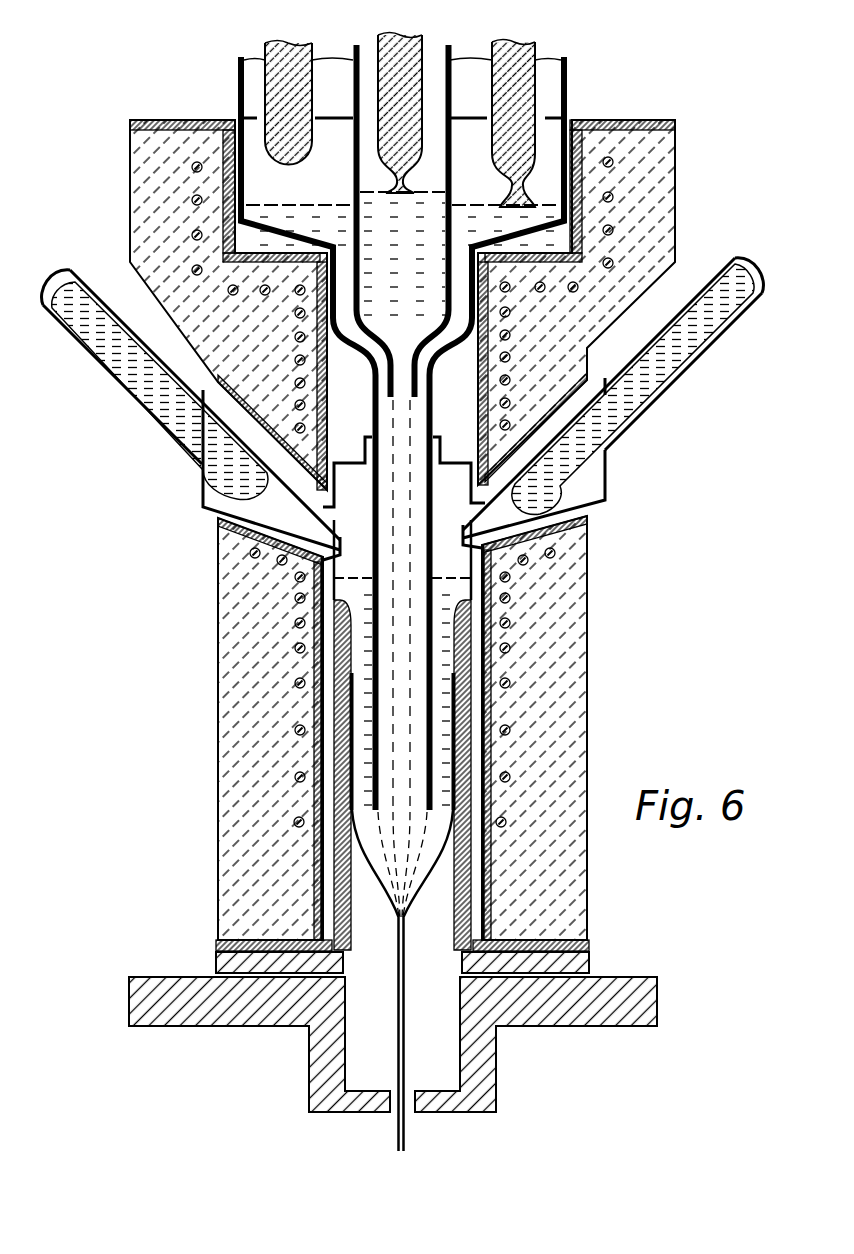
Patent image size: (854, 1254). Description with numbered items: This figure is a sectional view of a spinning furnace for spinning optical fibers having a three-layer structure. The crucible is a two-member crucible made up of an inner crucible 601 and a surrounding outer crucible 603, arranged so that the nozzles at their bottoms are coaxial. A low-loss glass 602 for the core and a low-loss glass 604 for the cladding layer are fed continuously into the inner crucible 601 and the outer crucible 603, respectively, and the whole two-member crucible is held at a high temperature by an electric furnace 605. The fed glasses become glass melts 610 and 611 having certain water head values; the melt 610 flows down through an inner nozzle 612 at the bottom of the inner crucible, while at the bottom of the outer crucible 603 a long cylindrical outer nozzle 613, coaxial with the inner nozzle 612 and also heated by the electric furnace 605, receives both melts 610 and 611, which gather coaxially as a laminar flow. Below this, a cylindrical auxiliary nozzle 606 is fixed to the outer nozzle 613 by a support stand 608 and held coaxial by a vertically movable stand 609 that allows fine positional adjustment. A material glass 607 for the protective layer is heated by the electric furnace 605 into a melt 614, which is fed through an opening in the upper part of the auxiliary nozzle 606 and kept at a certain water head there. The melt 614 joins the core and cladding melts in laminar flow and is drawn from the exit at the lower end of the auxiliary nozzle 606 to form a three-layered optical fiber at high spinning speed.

The inner crucible 601 is at (352, 60).
The low-loss glass for a core 602 is at (408, 38).
The outer crucible 603 is at (564, 62).
The low-loss glass for a cladding layer 604 is at (527, 45).
The electric furnace 605 is at (675, 148).
The auxiliary nozzle 606 is at (455, 700).
The material glass for a protective layer 607 is at (154, 412).
The support stand 608 is at (579, 952).
The vertically movable stand 609 is at (637, 988).
The glass melt for the core 610 is at (424, 304).
The glass melt for the cladding layer 611 is at (333, 218).
The inner nozzle 612 is at (376, 372).
The outer nozzle 613 is at (338, 562).
The melt for the protective layer 614 is at (345, 596).